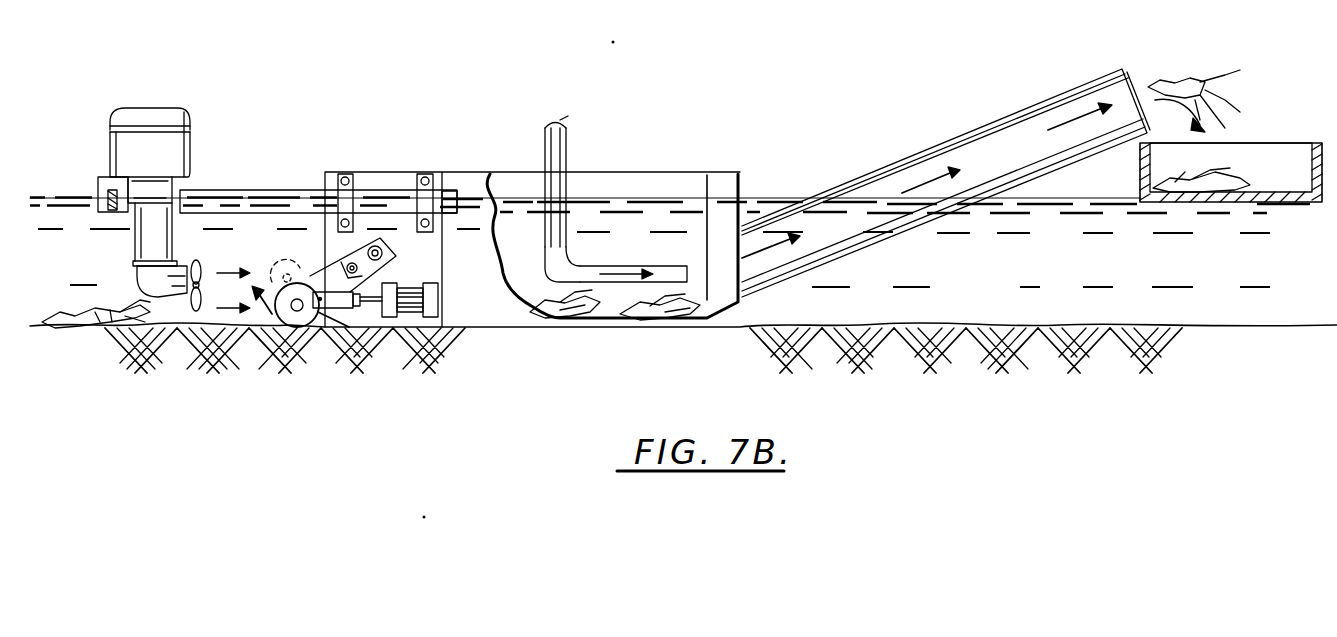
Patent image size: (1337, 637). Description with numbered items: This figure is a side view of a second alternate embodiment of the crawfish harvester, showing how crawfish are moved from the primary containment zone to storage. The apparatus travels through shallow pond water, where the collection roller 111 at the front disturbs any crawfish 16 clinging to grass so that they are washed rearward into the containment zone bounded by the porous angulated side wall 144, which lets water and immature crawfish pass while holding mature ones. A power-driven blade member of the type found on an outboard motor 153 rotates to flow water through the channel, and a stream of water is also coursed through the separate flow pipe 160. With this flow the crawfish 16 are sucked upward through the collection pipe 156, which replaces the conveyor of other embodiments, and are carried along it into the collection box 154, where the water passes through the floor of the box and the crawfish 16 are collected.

The outboard motor 153 is at (165, 148).
The separate flow pipe 160 is at (566, 147).
The angulated side wall 144 is at (732, 178).
The collection pipe 156 is at (1000, 140).
The crawfish 16 is at (1197, 88).
The collection box 154 is at (1300, 160).
The collection roller 111 is at (181, 308).